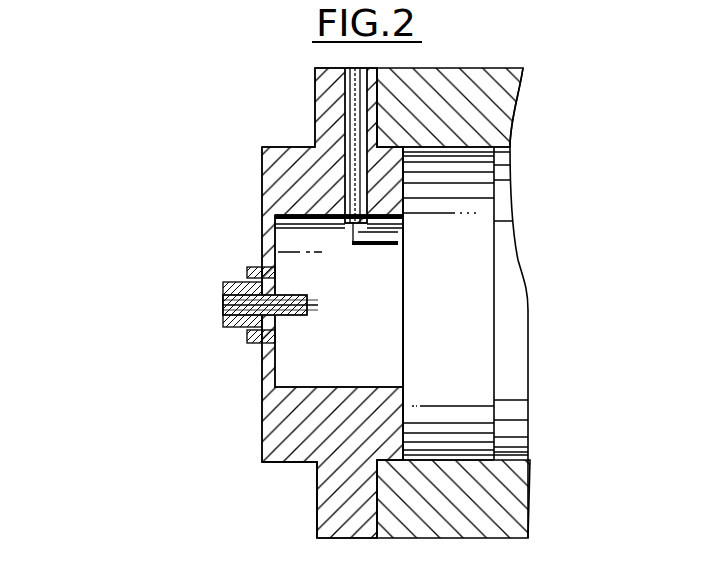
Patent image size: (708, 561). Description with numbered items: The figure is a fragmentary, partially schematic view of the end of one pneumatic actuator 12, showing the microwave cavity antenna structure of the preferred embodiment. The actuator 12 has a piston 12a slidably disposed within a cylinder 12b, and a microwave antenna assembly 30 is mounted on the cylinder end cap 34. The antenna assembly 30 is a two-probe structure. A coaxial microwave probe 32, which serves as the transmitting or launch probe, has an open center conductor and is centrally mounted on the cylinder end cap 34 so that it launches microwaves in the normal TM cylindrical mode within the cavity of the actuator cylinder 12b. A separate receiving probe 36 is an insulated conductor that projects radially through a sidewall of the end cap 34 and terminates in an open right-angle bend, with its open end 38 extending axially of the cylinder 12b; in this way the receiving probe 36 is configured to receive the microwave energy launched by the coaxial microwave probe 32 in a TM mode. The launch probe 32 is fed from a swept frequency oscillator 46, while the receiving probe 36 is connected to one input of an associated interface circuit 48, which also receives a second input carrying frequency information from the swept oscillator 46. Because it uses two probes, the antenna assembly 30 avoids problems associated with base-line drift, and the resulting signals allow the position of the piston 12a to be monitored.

The pneumatic actuator 12 is at (513, 63).
The piston 12a is at (509, 266).
The cylinder 12b is at (466, 66).
The antenna assembly 30 is at (297, 143).
The coaxial microwave probe 32 is at (243, 282).
The cylinder end cap 34 is at (270, 442).
The receiving probe 36 is at (350, 99).
The open end 38 is at (362, 247).
The swept frequency oscillator 46 is at (221, 306).
The interface circuit 48 is at (353, 68).